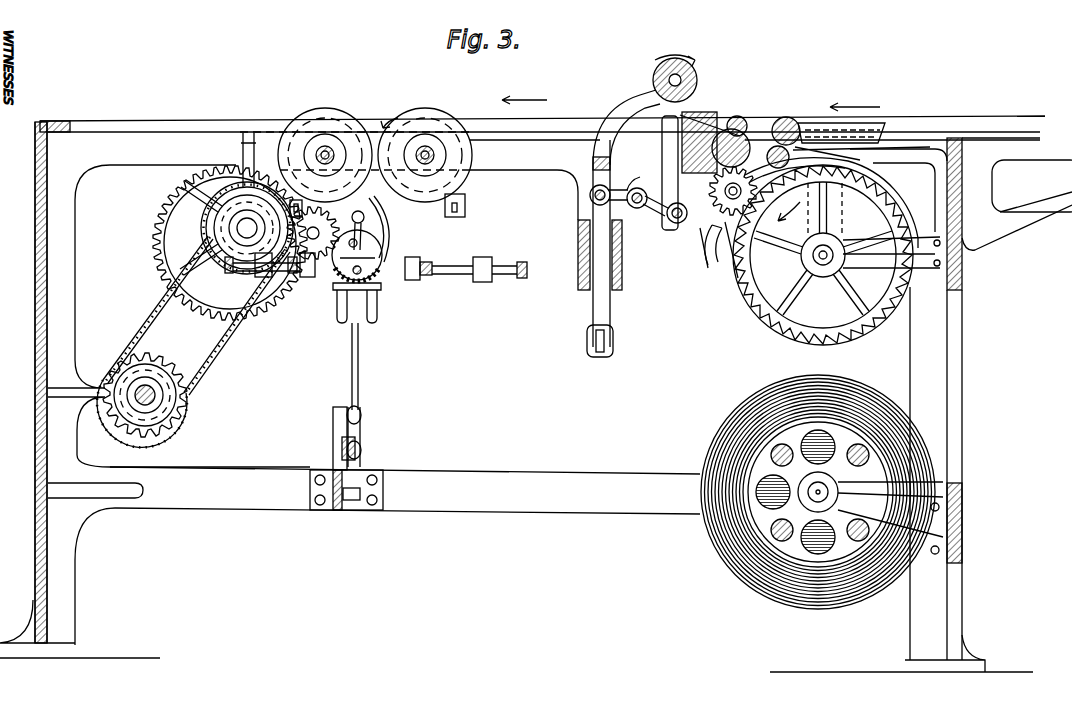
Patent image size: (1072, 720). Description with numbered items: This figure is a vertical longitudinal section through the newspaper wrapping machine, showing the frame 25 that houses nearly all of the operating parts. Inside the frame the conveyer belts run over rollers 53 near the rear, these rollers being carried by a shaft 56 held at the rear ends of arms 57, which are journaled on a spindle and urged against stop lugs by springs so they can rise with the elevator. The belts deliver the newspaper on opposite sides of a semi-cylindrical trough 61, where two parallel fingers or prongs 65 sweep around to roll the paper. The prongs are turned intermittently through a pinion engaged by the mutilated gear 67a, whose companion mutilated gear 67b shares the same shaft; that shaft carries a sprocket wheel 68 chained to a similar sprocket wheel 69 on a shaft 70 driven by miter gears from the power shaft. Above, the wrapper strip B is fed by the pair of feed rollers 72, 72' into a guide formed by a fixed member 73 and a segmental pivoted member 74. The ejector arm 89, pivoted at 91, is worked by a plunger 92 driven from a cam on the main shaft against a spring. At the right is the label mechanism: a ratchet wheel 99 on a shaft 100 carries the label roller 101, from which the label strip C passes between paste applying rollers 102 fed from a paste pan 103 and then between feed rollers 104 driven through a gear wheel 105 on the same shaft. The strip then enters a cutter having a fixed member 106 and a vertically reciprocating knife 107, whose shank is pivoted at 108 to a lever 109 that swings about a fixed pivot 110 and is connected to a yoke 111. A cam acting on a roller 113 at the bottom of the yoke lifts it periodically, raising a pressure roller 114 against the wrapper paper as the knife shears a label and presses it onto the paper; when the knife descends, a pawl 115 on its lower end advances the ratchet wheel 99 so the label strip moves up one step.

The frame 25 is at (26, 382).
The rollers 53 is at (485, 282).
The shaft 56 is at (503, 259).
The arms 57 is at (526, 278).
The trough 61 is at (380, 272).
The fingers or prongs 65 is at (380, 253).
The mutilated gear 67a is at (180, 246).
The mutilated gear 67b is at (182, 228).
The sprocket wheel 68 is at (245, 185).
The sprocket wheel 69 is at (152, 378).
The shaft 70 is at (160, 402).
The feed roller 72 is at (425, 144).
The feed roller 72' is at (325, 150).
The fixed member 73 is at (404, 170).
The segmental pivoted member 74 is at (358, 216).
The ejector arm 89 is at (360, 373).
The pivot 91 is at (364, 415).
The plunger 92 is at (343, 452).
The ratchet wheel 99 is at (800, 336).
The shaft 100 is at (819, 258).
The roller 101 is at (762, 318).
The paste applying rollers 102 is at (790, 112).
The paste pan 103 is at (826, 122).
The feed rollers 104 is at (742, 117).
The wheel 105 is at (718, 236).
The fixed member 106 is at (706, 124).
The knife 107 is at (678, 183).
The pivot 108 is at (670, 224).
The lever 109 is at (590, 200).
The pivot 110 is at (637, 186).
The yoke 111 is at (633, 92).
The roller 113 is at (612, 334).
The pressure roller 114 is at (665, 62).
The pawl 115 is at (722, 252).
The strip of paper B is at (574, 116).
The label strip C is at (858, 405).